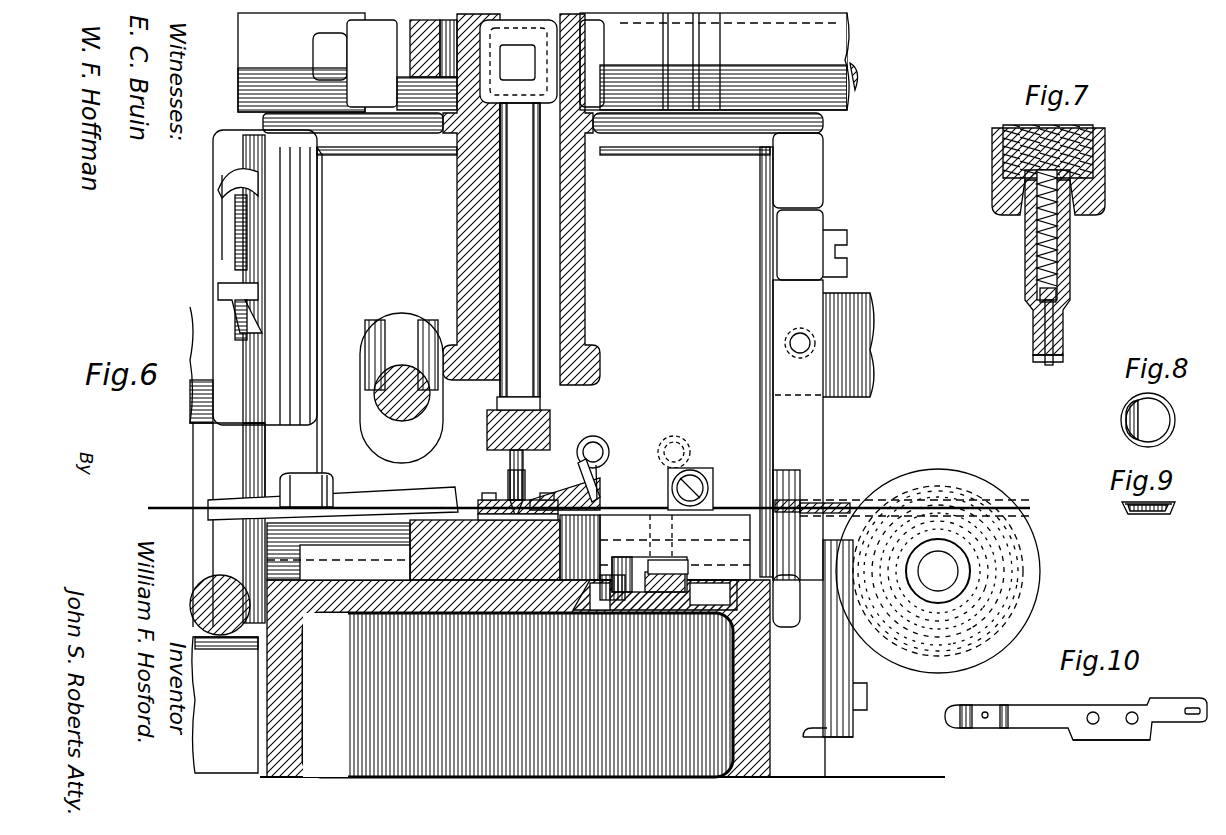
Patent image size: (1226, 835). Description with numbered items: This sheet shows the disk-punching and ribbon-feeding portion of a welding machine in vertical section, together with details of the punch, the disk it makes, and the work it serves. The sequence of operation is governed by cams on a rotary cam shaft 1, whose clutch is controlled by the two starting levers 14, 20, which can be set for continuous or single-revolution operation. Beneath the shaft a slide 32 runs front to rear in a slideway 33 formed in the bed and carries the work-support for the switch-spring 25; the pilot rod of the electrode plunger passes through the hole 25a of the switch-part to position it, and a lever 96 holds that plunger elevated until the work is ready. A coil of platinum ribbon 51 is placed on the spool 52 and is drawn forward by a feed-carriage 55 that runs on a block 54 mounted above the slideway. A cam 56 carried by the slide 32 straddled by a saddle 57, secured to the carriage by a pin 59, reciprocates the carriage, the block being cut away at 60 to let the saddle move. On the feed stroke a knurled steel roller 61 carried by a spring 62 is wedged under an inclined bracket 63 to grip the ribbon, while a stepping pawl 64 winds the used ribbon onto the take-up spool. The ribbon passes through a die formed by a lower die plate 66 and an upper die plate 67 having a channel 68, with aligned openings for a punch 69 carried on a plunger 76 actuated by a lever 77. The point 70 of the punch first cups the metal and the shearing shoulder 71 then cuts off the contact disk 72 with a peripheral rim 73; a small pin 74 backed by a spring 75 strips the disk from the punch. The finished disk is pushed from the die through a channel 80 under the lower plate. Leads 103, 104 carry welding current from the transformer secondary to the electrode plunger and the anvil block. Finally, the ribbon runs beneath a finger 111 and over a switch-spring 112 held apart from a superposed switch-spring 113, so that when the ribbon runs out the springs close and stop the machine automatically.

In FIG. 6, the rotary cam shaft 1 is at (612, 52).
In FIG. 6, the starting lever 14 is at (248, 205).
In FIG. 6, the starting lever 20 is at (228, 319).
In FIG. 10, the switch-spring 25 is at (1060, 706).
In FIG. 10, the hole 25a is at (1093, 725).
In FIG. 6, the slide 32 is at (640, 602).
In FIG. 6, the slideway 33 is at (518, 678).
In FIG. 6, the platinum ribbon 51 is at (176, 502).
In FIG. 6, the spool 52 is at (1040, 598).
In FIG. 6, the block 54 is at (708, 570).
In FIG. 6, the feed-carriage 55 is at (723, 508).
In FIG. 6, the cam 56 is at (610, 602).
In FIG. 6, the saddle 57 is at (660, 602).
In FIG. 6, the pin 59 is at (657, 497).
In FIG. 6, the cut-away 60 is at (557, 602).
In FIG. 6, the knurled steel roller 61 is at (575, 488).
In FIG. 6, the spring 62 is at (600, 460).
In FIG. 6, the inclined bracket 63 is at (605, 490).
In FIG. 6, the stepping pawl 64 is at (372, 497).
In FIG. 6, the lower die plate 66 is at (495, 537).
In FIG. 6, the upper die plate 67 is at (498, 490).
In FIG. 6, the channel 68 is at (482, 512).
In FIG. 6, the punch 69 is at (507, 500).
In FIG. 7, the punch 69 is at (1072, 278).
In FIG. 7, the point of the punch 70 is at (1066, 355).
In FIG. 7, the shoulder 71 is at (1068, 345).
In FIG. 8, the contact disk 72 is at (1130, 427).
In FIG. 9, the contact disk 72 is at (1150, 514).
In FIG. 10, the contact disk 72 is at (988, 712).
In FIG. 8, the peripheral flange or rim 73 is at (1175, 428).
In FIG. 9, the peripheral flange or rim 73 is at (1176, 505).
In FIG. 6, the pin 74 is at (518, 520).
In FIG. 7, the pin 74 is at (1046, 362).
In FIG. 7, the spring 75 is at (1060, 248).
In FIG. 6, the plunger 76 is at (560, 259).
In FIG. 6, the lever 77 is at (518, 61).
In FIG. 6, the channel 80 is at (420, 560).
In FIG. 6, the lever 96 is at (410, 60).
In FIG. 6, the lead 103 is at (403, 416).
In FIG. 6, the lead 104 is at (192, 603).
In FIG. 6, the finger 111 is at (792, 500).
In FIG. 6, the switch-spring 112 is at (822, 505).
In FIG. 6, the switch-spring 113 is at (800, 500).